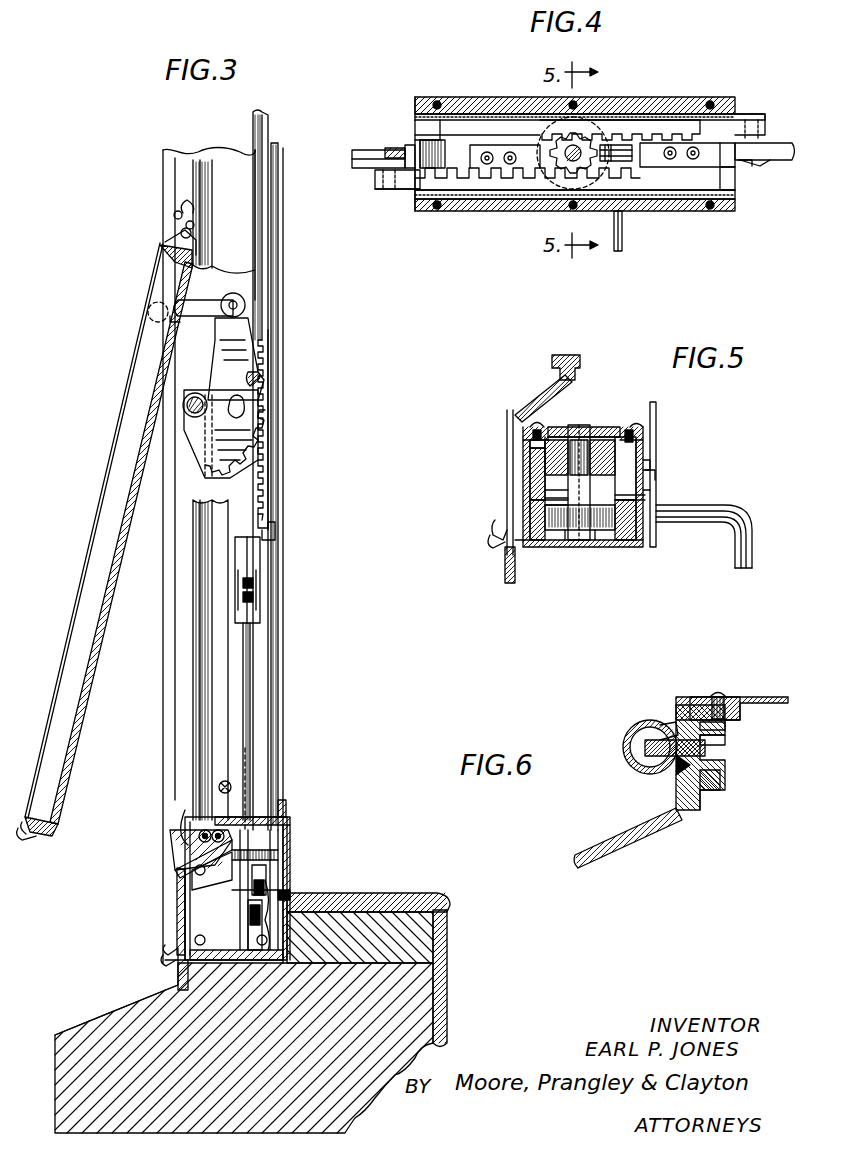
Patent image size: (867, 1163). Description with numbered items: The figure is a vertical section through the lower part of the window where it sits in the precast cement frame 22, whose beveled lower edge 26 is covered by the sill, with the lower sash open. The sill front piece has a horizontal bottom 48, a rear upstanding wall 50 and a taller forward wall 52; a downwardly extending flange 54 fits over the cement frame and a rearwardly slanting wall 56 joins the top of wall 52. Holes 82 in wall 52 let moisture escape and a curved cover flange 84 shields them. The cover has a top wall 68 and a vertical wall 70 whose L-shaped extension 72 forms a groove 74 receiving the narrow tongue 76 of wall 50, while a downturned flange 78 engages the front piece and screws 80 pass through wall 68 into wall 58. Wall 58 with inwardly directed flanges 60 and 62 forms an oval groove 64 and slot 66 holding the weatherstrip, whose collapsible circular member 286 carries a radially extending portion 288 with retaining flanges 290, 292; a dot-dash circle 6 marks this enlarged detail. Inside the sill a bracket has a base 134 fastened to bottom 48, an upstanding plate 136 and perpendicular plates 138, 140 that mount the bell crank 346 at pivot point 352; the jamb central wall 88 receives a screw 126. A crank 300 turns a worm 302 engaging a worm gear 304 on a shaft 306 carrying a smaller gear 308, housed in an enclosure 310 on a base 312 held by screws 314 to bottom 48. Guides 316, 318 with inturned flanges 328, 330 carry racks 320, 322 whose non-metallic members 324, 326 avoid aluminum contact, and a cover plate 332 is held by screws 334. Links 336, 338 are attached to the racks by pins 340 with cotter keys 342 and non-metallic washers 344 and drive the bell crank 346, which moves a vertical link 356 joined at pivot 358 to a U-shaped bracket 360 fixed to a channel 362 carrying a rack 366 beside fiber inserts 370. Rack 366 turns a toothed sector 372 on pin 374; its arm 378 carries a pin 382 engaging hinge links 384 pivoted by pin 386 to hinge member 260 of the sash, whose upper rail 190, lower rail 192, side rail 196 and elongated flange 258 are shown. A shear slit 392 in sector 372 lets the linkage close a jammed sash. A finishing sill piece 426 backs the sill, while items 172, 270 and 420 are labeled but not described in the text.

In FIG. 3, the pivot axis 6 is at (185, 805).
In FIG. 3, the precast cement frame 22 is at (92, 1058).
In FIG. 3, the beveled lower edge 26 is at (98, 1018).
In FIG. 3, the bottom 48 is at (232, 963).
In FIG. 4, the bottom 48 is at (418, 200).
In FIG. 5, the bottom 48 is at (555, 548).
In FIG. 3, the upstanding wall 50 is at (290, 895).
In FIG. 5, the upstanding wall 50 is at (656, 488).
In FIG. 3, the forward wall 52 is at (185, 897).
In FIG. 5, the forward wall 52 is at (506, 493).
In FIG. 3, the downwardly extending flange 54 is at (178, 963).
In FIG. 5, the downwardly extending flange 54 is at (508, 580).
In FIG. 3, the rearwardly slanting wall 56 is at (195, 858).
In FIG. 6, the rearwardly slanting wall 56 is at (622, 830).
In FIG. 3, the wall 58 is at (228, 812).
In FIG. 5, the wall 58 is at (585, 365).
In FIG. 6, the wall 58 is at (725, 750).
In FIG. 6, the inwardly directed flange 60 is at (670, 722).
In FIG. 6, the inwardly directed flange 62 is at (680, 760).
In FIG. 6, the oval groove 64 is at (708, 775).
In FIG. 6, the slot 66 is at (650, 755).
In FIG. 3, the top wall 68 is at (250, 815).
In FIG. 6, the top wall 68 is at (775, 688).
In FIG. 3, the vertical wall 70 is at (280, 855).
In FIG. 5, the vertical wall 70 is at (657, 408).
In FIG. 5, the L-shaped extension 72 is at (640, 440).
In FIG. 5, the groove 74 is at (652, 455).
In FIG. 5, the narrow tongue 76 is at (655, 462).
In FIG. 6, the downturned flange 78 is at (700, 697).
In FIG. 6, the screws 80 is at (720, 697).
In FIG. 3, the holes 82 is at (170, 960).
In FIG. 5, the holes 82 is at (503, 540).
In FIG. 3, the cover flange 84 is at (170, 945).
In FIG. 5, the cover flange 84 is at (500, 525).
In FIG. 3, the central wall 88 is at (188, 605).
In FIG. 3, the screw 126 is at (230, 785).
In FIG. 3, the base 134 is at (200, 963).
In FIG. 3, the upstanding plate 136 is at (180, 870).
In FIG. 3, the plate 138 is at (290, 835).
In FIG. 3, the plate 140 is at (190, 878).
In FIG. 3, the cap 172 is at (288, 800).
In FIG. 3, the upper rail 190 is at (160, 245).
In FIG. 3, the lower rail 192 is at (42, 828).
In FIG. 3, the side rail 196 is at (110, 500).
In FIG. 3, the elongated flange 258 is at (24, 850).
In FIG. 3, the hinge member 260 is at (165, 210).
In FIG. 3, the strut 270 is at (100, 600).
In FIG. 3, the collapsible circular member 286 is at (185, 205).
In FIG. 6, the collapsible circular member 286 is at (625, 735).
In FIG. 6, the radially extending portion 288 is at (715, 745).
In FIG. 6, the retaining flange 290 is at (715, 727).
In FIG. 6, the retaining flange 292 is at (725, 778).
In FIG. 4, the crank 300 is at (625, 236).
In FIG. 5, the crank 300 is at (735, 530).
In FIG. 4, the worm 302 is at (625, 140).
In FIG. 4, the worm gear 304 is at (540, 118).
In FIG. 5, the worm gear 304 is at (608, 535).
In FIG. 4, the shaft 306 is at (578, 145).
In FIG. 5, the shaft 306 is at (580, 540).
In FIG. 4, the smaller gear 308 is at (556, 130).
In FIG. 5, the smaller gear 308 is at (575, 440).
In FIG. 4, the enclosure 310 is at (540, 150).
In FIG. 5, the enclosure 310 is at (530, 512).
In FIG. 4, the base 312 is at (495, 160).
In FIG. 5, the base 312 is at (535, 548).
In FIG. 4, the screws 314 is at (515, 165).
In FIG. 4, the guide 316 is at (422, 100).
In FIG. 5, the guide 316 is at (530, 480).
In FIG. 4, the guide 318 is at (423, 211).
In FIG. 5, the guide 318 is at (656, 478).
In FIG. 4, the rack 320 is at (418, 140).
In FIG. 5, the rack 320 is at (533, 445).
In FIG. 4, the rack 322 is at (395, 184).
In FIG. 5, the rack 322 is at (600, 440).
In FIG. 4, the non-metallic member 324 is at (418, 114).
In FIG. 5, the non-metallic member 324 is at (535, 455).
In FIG. 4, the non-metallic member 326 is at (430, 178).
In FIG. 5, the non-metallic member 326 is at (625, 440).
In FIG. 4, the inturned flange 328 is at (425, 132).
In FIG. 5, the inturned flange 328 is at (538, 470).
In FIG. 4, the inturned flange 330 is at (718, 212).
In FIG. 5, the inturned flange 330 is at (656, 505).
In FIG. 5, the cover plate 332 is at (537, 425).
In FIG. 4, the screws 334 is at (435, 210).
In FIG. 5, the screws 334 is at (535, 440).
In FIG. 3, the link 336 is at (255, 960).
In FIG. 4, the link 336 is at (780, 165).
In FIG. 4, the link 338 is at (352, 160).
In FIG. 4, the pins 340 is at (415, 150).
In FIG. 4, the cotter keys 342 is at (385, 150).
In FIG. 4, the non-metallic washers 344 is at (375, 178).
In FIG. 3, the bell crank 346 is at (275, 963).
In FIG. 3, the pivot point 352 is at (262, 850).
In FIG. 3, the vertically extending link 356 is at (248, 677).
In FIG. 3, the pivot 358 is at (258, 588).
In FIG. 3, the U-shaped bracket 360 is at (250, 560).
In FIG. 3, the channel 362 is at (268, 540).
In FIG. 3, the rack 366 is at (266, 468).
In FIG. 3, the fiber inserts 370 is at (272, 445).
In FIG. 3, the toothed sector 372 is at (245, 420).
In FIG. 3, the pin 374 is at (185, 406).
In FIG. 3, the arm 378 is at (228, 345).
In FIG. 3, the pin 382 is at (250, 303).
In FIG. 3, the hinge links 384 is at (190, 308).
In FIG. 3, the pin 386 is at (148, 305).
In FIG. 3, the shear slit 392 is at (262, 388).
In FIG. 3, the wall 420 is at (447, 940).
In FIG. 3, the finishing sill piece 426 is at (395, 905).